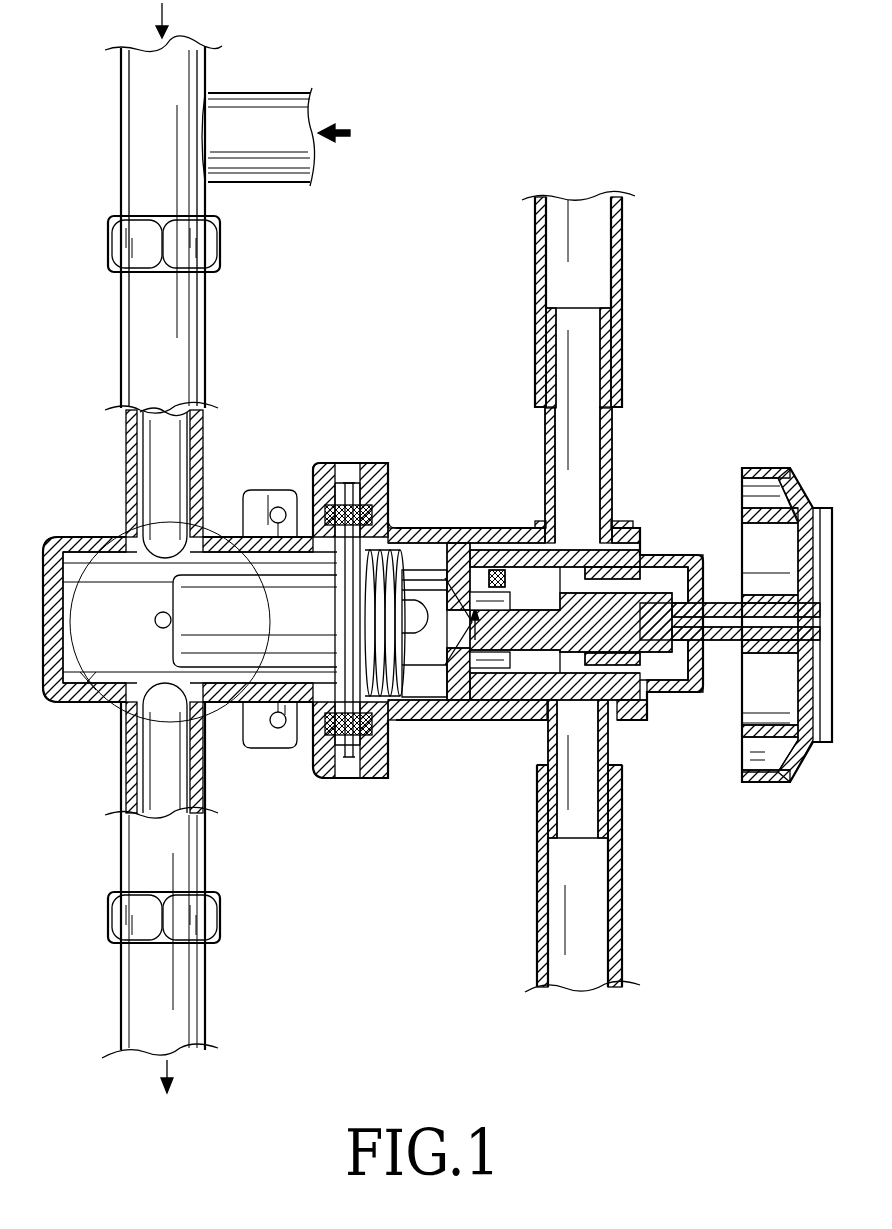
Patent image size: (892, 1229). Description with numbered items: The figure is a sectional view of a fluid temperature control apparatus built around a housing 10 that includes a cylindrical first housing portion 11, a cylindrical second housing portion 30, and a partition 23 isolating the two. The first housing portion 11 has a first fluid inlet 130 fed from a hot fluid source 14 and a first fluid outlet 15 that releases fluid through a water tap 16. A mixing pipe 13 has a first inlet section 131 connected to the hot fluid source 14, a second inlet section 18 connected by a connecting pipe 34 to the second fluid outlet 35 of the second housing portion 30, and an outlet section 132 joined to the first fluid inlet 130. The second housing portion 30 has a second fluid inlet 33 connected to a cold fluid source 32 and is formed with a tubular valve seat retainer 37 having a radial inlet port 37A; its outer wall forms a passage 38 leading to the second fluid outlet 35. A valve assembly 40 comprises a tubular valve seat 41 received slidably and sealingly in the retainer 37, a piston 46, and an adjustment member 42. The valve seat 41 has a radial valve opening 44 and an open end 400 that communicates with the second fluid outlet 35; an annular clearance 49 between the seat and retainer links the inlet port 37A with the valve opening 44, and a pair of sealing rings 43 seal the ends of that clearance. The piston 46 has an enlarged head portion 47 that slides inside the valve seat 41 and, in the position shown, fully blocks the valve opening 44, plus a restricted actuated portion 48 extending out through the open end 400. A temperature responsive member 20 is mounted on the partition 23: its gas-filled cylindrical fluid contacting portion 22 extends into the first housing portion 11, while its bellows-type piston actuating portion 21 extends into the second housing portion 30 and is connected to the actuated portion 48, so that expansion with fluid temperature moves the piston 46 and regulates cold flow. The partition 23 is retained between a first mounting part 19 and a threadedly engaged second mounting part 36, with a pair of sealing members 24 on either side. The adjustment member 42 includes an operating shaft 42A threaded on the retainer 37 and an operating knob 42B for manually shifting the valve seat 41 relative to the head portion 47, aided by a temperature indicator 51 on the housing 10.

The housing 10 is at (232, 446).
The first housing portion 11 is at (117, 548).
The mixing pipe 13 is at (126, 194).
The hot fluid source 14 is at (215, 46).
The first fluid outlet 15 is at (155, 878).
The water tap 16 is at (158, 1045).
The second inlet section 18 is at (312, 132).
The first mounting part 19 is at (332, 467).
The temperature responsive member 20 is at (308, 674).
The piston actuating portion 21 is at (390, 745).
The fluid contacting portion 22 is at (182, 665).
The partition 23 is at (388, 487).
The sealing members 24 is at (328, 768).
The second housing portion 30 is at (625, 470).
The cold fluid source 32 is at (588, 875).
The second fluid inlet 33 is at (558, 882).
The connecting pipe 34 is at (615, 268).
The second fluid outlet 35 is at (577, 308).
The second mounting part 36 is at (378, 752).
The tubular valve seat retainer 37 is at (610, 558).
The radial inlet port 37A is at (706, 665).
The passage 38 is at (538, 535).
The valve assembly 40 is at (620, 613).
The tubular valve seat 41 is at (640, 658).
The adjustment member 42 is at (810, 482).
The operating shaft 42A is at (727, 603).
The operating knob 42B is at (810, 782).
The sealing rings 43 is at (503, 580).
The radial valve opening 44 is at (535, 655).
The piston 46 is at (460, 650).
The head portion 47 is at (588, 672).
The actuated portion 48 is at (398, 703).
The annular clearance 49 is at (624, 667).
The temperature indicator 51 is at (88, 677).
The first fluid inlet 130 is at (170, 425).
The first inlet section 131 is at (123, 118).
The outlet section 132 is at (198, 198).
The open end 400 is at (461, 597).